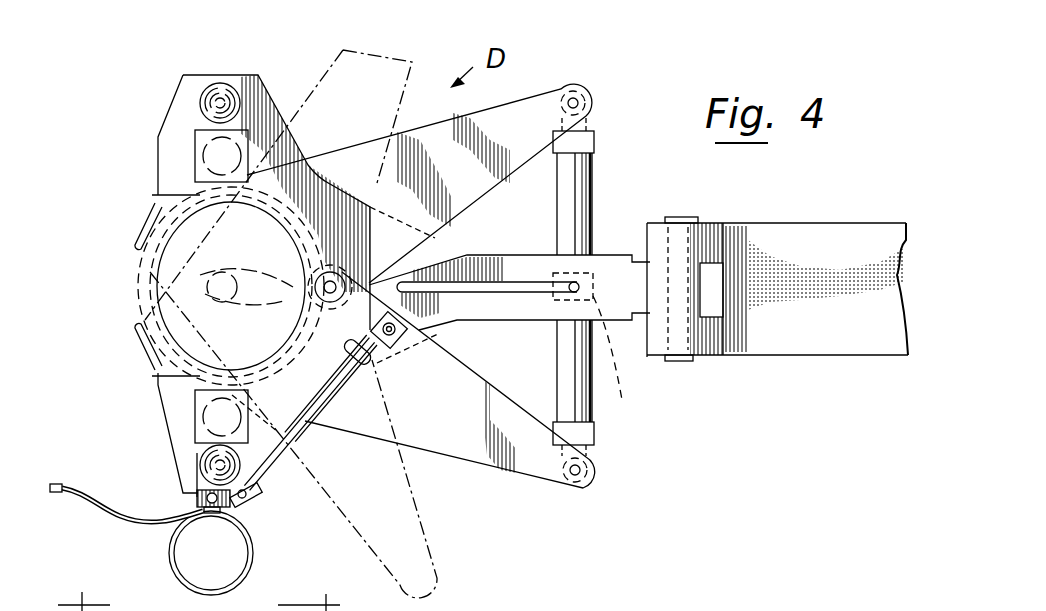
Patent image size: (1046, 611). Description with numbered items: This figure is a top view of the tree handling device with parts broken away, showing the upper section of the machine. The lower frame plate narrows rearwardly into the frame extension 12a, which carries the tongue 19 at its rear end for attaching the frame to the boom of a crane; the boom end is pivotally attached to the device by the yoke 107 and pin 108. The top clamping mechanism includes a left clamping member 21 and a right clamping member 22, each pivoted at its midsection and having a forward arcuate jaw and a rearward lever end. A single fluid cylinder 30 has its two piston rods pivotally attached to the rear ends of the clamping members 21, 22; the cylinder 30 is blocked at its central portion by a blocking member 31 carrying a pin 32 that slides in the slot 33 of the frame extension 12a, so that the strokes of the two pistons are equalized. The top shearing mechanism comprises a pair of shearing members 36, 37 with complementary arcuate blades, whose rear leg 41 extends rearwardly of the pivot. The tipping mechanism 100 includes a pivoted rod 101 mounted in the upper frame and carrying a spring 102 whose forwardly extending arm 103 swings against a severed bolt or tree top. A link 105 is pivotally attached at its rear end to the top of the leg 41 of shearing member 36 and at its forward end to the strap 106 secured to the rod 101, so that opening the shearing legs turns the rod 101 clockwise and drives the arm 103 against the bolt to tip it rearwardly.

The frame extension 12a is at (482, 253).
The tongue 19 is at (707, 300).
The left clamping member 21 is at (548, 468).
The right clamping member 22 is at (530, 112).
The fluid cylinder 30 is at (590, 190).
The blocking member 31 is at (621, 362).
The pin 32 is at (580, 283).
The slot 33 is at (493, 282).
The shearing member 36 is at (372, 429).
The shearing member 37 is at (362, 180).
The rear leg 41 is at (443, 386).
The tipping mechanism 100 is at (195, 522).
The pivoted rod 101 is at (210, 498).
The spring 102 is at (168, 560).
The arm 103 is at (90, 507).
The link 105 is at (303, 424).
The strap 106 is at (243, 500).
The yoke 107 is at (657, 230).
The pin 108 is at (668, 330).